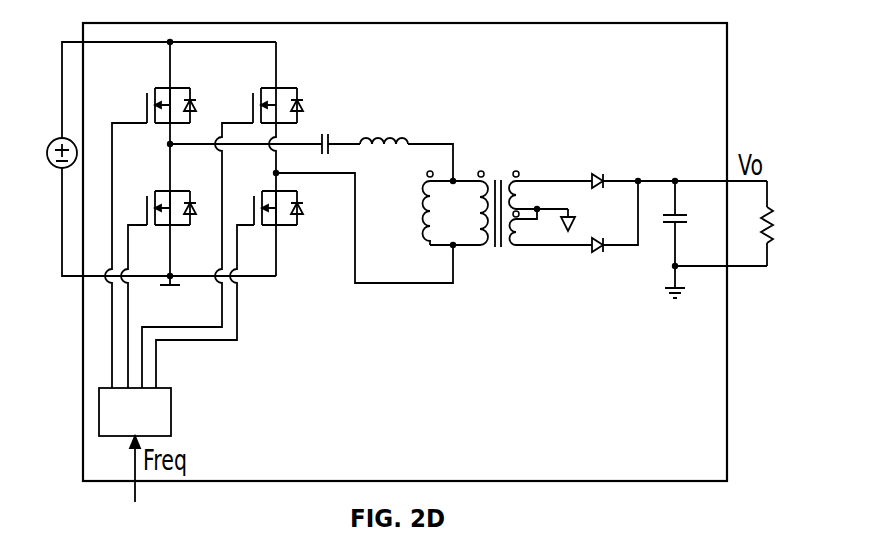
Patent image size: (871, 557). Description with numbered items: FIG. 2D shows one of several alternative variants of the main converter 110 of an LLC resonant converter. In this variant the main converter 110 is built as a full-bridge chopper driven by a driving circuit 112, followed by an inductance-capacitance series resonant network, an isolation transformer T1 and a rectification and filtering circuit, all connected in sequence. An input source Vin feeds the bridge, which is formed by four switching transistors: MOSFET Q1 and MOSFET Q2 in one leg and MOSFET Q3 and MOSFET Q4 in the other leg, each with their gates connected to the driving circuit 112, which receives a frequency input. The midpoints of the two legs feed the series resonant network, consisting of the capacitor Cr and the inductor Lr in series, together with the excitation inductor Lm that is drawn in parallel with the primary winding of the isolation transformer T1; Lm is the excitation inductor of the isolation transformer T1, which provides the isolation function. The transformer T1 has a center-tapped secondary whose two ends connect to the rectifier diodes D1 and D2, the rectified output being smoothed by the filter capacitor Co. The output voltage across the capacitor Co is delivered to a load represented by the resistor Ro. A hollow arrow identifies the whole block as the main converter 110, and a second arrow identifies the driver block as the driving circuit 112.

The main converter 110 is at (463, 252).
The driving circuit 112 is at (177, 412).
The input voltage source Vin is at (43, 153).
The MOSFET Q1 is at (164, 86).
The MOSFET Q2 is at (163, 189).
The switch transistor Q3 is at (270, 86).
The switch transistor Q4 is at (270, 189).
The capacitor Cr is at (326, 128).
The inductor Lr is at (384, 125).
The excitation inductor Lm is at (411, 213).
The isolation transformer T1 is at (497, 210).
The diode D1 is at (599, 161).
The diode D2 is at (599, 263).
The capacitor Co is at (685, 237).
The load resistor Ro is at (783, 225).